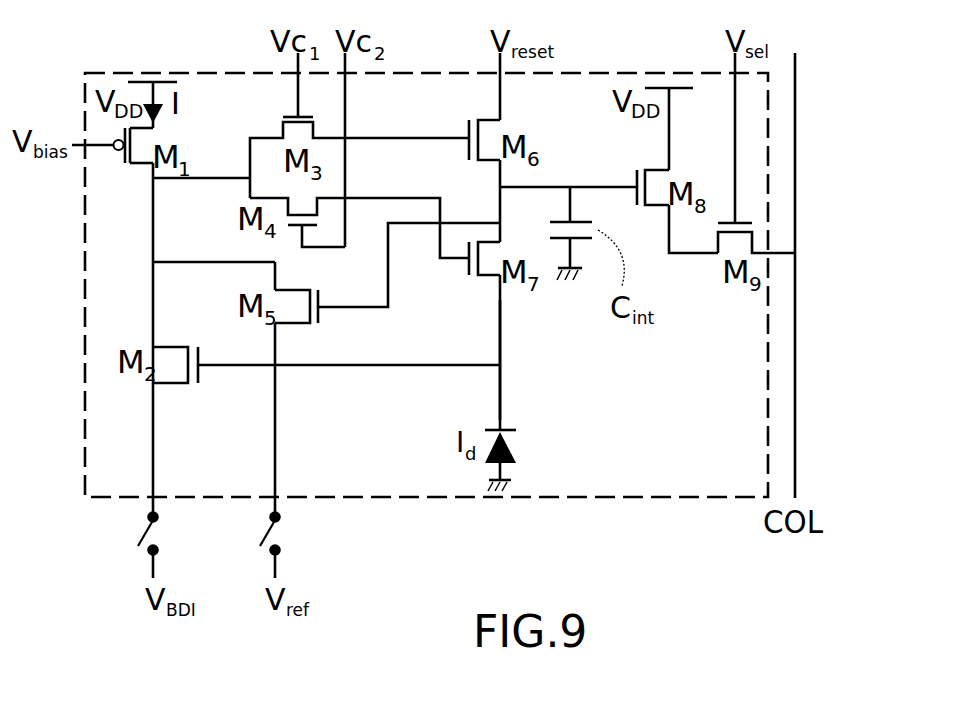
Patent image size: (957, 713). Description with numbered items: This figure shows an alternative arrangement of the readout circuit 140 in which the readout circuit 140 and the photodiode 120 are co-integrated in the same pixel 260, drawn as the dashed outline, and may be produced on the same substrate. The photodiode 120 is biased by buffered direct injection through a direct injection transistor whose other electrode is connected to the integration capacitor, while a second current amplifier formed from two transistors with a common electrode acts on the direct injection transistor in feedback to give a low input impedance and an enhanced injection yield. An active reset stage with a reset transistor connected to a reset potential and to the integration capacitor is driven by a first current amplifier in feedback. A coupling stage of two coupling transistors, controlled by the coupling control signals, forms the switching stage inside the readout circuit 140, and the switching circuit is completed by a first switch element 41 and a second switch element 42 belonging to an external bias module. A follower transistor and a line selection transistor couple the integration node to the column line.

The photodiode 120 is at (526, 443).
The readout circuit 140 is at (557, 354).
The first switch element 41 is at (308, 532).
The second switch element 42 is at (116, 543).
The pixel 260 is at (676, 500).